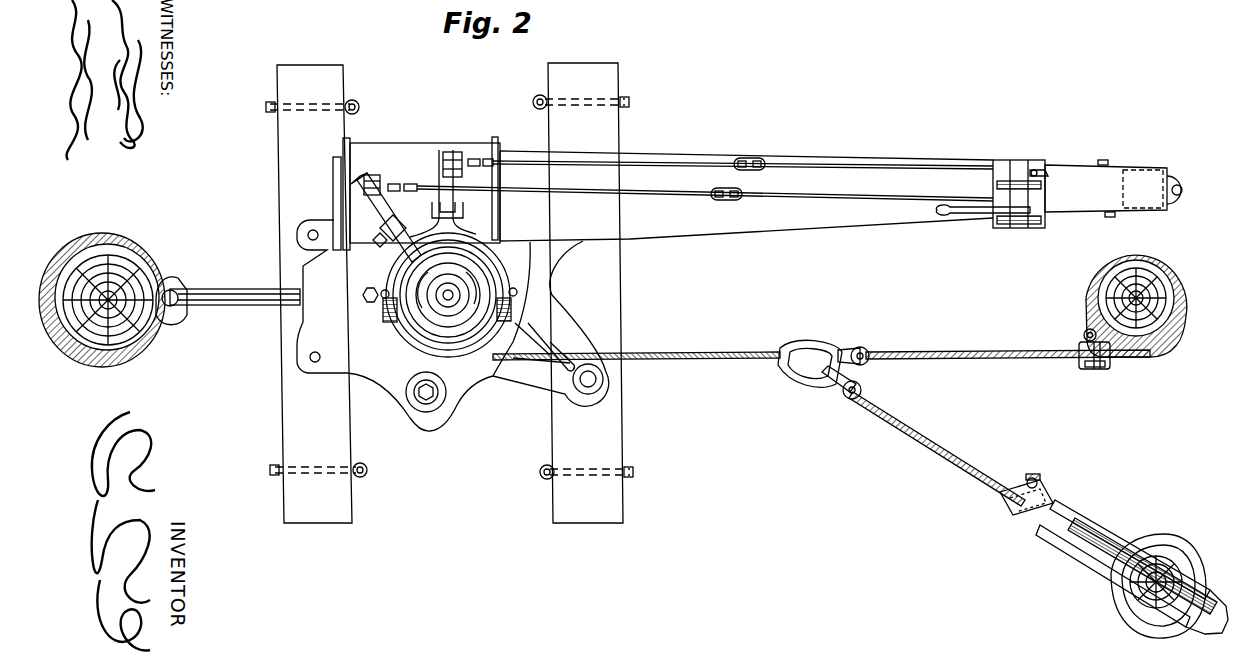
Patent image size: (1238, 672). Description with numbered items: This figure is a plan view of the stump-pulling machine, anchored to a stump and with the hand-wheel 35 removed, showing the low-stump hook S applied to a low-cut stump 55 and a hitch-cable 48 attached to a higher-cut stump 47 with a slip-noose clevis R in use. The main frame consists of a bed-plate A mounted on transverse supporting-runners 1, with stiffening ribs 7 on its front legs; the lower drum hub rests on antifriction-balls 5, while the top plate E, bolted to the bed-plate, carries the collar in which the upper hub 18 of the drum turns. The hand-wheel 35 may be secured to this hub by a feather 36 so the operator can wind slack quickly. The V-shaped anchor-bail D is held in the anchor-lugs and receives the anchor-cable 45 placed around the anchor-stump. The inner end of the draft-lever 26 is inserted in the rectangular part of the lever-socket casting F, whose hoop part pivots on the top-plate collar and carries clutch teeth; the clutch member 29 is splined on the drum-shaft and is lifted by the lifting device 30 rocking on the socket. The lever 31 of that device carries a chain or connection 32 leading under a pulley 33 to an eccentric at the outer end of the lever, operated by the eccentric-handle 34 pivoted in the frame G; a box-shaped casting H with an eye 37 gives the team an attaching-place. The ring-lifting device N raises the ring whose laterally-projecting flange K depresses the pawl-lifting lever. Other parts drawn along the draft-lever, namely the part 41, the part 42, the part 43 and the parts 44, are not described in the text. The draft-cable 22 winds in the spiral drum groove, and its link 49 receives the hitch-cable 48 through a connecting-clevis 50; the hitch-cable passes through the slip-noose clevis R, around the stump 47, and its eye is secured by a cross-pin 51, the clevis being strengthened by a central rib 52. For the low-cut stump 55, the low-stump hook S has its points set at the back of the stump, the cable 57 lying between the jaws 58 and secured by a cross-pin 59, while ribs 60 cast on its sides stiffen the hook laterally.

The transverse supporting-runners 1 is at (449, 293).
The antifriction-balls 5 is at (467, 350).
The strengthening and stiffening ribs 7 is at (543, 347).
The upper hub 18 is at (455, 291).
The draft-cable 22 is at (636, 346).
The draft-lever 26 is at (333, 168).
The clutch member 29 is at (447, 310).
The lifting device 30 is at (396, 255).
The lever 31 is at (358, 197).
The chain or connection 32 is at (800, 198).
The pulley 33 is at (386, 181).
The eccentric-handle 34 is at (978, 214).
The hand-wheel 35 is at (462, 170).
The feather 36 is at (420, 300).
The eye 37 is at (1180, 178).
The vertical rod 41 is at (498, 158).
The rod 42 is at (822, 165).
The pin 43 is at (1045, 170).
The turnbuckles 44 is at (757, 171).
The anchor-cable 45 is at (155, 272).
The tree or high-cut stump 47 is at (1135, 302).
The hitch-cable 48 is at (1008, 345).
The link 49 is at (808, 346).
The connecting-clevis 50 is at (858, 348).
The cross-pin 51 is at (1083, 334).
The central rib 52 is at (1092, 370).
The low-cut stump 55 is at (1160, 555).
The cable 57 is at (937, 449).
The jaws 58 is at (1000, 500).
The cross-pin 59 is at (1038, 480).
The ribs 60 is at (1077, 526).
The bed-plate A is at (453, 336).
The anchor-bail D is at (232, 306).
The top plate E is at (413, 298).
The lever-socket casting F is at (425, 193).
The casting or frame G is at (1032, 203).
The box-shaped casting H is at (1106, 188).
The laterally-projecting flange K is at (423, 383).
The ring-lifting device N is at (455, 196).
The slip-noose clevis R is at (1105, 372).
The low-stump hook S is at (1132, 566).